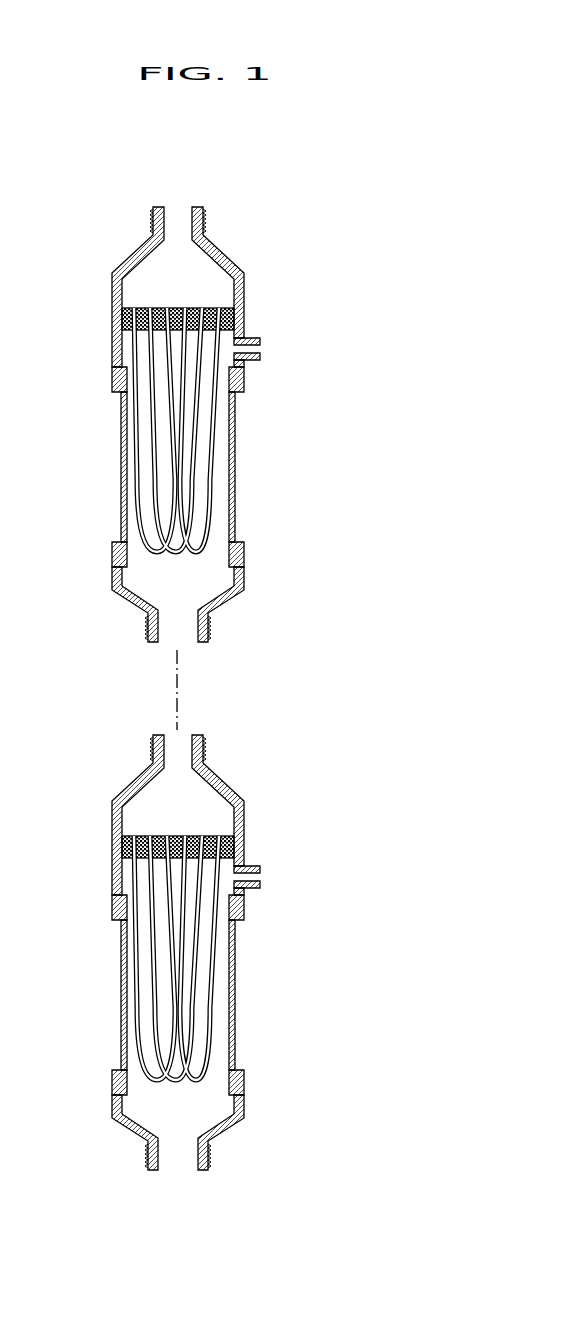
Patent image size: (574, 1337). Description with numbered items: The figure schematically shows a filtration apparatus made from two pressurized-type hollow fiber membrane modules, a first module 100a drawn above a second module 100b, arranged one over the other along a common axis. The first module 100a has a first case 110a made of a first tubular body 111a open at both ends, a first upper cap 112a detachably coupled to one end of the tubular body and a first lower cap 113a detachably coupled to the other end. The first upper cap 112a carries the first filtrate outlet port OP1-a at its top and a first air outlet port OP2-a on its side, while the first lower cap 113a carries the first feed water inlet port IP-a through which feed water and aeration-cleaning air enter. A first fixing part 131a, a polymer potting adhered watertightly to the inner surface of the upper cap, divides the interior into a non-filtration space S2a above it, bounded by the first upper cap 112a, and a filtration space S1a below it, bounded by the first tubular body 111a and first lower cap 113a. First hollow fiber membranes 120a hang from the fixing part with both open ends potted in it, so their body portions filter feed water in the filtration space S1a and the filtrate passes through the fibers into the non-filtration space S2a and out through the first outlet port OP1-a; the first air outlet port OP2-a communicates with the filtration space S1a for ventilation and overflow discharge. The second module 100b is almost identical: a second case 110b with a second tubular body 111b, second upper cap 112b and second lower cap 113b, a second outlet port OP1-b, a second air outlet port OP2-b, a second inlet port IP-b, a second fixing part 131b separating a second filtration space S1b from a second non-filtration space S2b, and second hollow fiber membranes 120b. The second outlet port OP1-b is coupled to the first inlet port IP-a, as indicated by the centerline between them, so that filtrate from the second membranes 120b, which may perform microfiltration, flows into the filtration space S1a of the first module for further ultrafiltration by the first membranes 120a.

The first pressurized-type hollow fiber membrane module 100a is at (242, 219).
The second pressurized-type hollow fiber membrane module 100b is at (210, 933).
The first case 110a is at (325, 383).
The second case 110b is at (226, 955).
The first tubular body 111a is at (233, 468).
The second tubular body 111b is at (219, 995).
The first upper cap 112a is at (244, 384).
The second upper cap 112b is at (214, 911).
The first lower cap 113a is at (244, 554).
The second lower cap 113b is at (214, 1083).
The first hollow fiber membranes 120a is at (132, 433).
The second hollow fiber membranes 120b is at (139, 958).
The first fixing part 131a is at (240, 315).
The second fixing part 131b is at (227, 847).
The first outlet port OP1-a is at (152, 218).
The second outlet port OP1-b is at (141, 749).
The first air outlet port OP2-a is at (258, 343).
The second air outlet port OP2-b is at (288, 877).
The first inlet port IP-a is at (208, 632).
The second inlet port IP-b is at (214, 1158).
The filtration space S1a is at (144, 575).
The second filtration space S1b is at (137, 1123).
The non-filtration space S2a is at (146, 290).
The second non-filtration space S2b is at (139, 822).